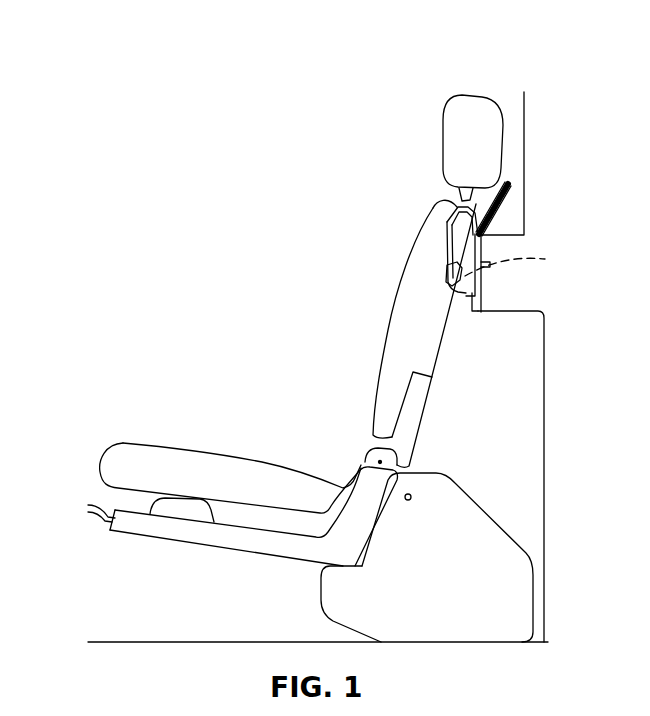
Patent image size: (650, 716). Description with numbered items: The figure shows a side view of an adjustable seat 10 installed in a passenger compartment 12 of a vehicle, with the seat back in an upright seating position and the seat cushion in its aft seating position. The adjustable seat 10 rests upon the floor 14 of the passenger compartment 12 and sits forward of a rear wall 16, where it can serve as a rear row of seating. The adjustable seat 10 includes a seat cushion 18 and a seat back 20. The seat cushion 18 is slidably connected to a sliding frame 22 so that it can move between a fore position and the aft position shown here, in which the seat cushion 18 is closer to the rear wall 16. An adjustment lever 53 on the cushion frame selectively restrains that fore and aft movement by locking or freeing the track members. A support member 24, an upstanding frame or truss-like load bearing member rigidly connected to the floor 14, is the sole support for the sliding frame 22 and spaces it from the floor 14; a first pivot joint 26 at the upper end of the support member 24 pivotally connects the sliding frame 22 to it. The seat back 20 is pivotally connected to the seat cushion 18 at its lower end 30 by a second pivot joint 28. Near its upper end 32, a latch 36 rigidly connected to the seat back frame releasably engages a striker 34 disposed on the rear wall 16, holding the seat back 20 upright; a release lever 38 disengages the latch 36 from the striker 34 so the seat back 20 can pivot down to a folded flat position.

The adjustable seat 10 is at (338, 148).
The passenger compartment 12 is at (232, 315).
The floor 14 is at (107, 642).
The rear wall 16 is at (524, 94).
The seat cushion 18 is at (177, 448).
The seat back 20 is at (397, 323).
The sliding frame 22 is at (157, 541).
The support member 24 is at (345, 598).
The first pivot joint 26 is at (408, 500).
The second pivot joint 28 is at (380, 462).
The lower end 30 is at (417, 410).
The upper end 32 is at (433, 208).
The striker 34 is at (482, 306).
The latch 36 is at (521, 264).
The release lever 38 is at (508, 185).
The adjustment lever 53 is at (88, 508).